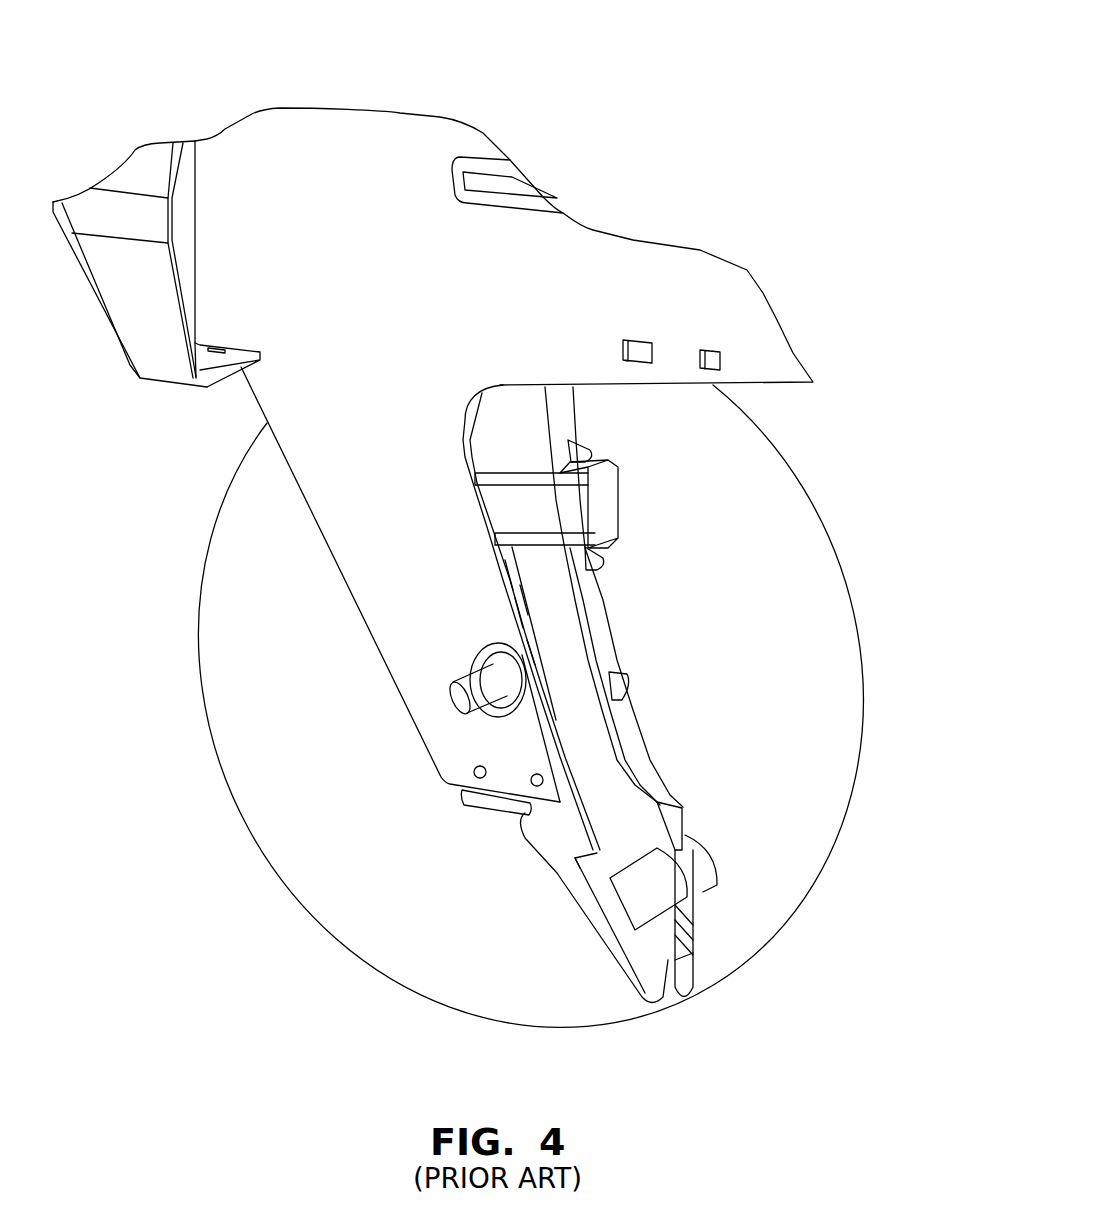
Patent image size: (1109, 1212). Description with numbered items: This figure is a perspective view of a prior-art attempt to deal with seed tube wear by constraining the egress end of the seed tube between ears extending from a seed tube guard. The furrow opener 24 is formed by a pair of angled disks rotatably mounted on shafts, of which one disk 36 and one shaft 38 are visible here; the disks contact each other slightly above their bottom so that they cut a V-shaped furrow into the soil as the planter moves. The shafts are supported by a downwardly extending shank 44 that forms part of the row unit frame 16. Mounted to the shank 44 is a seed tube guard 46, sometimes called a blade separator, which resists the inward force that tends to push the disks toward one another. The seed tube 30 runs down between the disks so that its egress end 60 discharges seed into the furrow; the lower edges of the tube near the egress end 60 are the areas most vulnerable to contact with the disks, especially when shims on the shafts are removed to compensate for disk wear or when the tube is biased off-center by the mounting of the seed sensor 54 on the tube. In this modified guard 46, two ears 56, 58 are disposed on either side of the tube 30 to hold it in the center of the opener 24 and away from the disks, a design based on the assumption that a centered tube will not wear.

The row unit frame 16 is at (148, 357).
The furrow opener 24 is at (634, 168).
The seed tube 30 is at (632, 742).
The disk 36 is at (262, 798).
The shaft 38 is at (452, 702).
The shank 44 is at (350, 532).
The seed tube guard 46 is at (550, 840).
The seed sensor 54 is at (603, 513).
The ear 56 is at (630, 890).
The ear 58 is at (702, 872).
The egress end 60 is at (693, 955).